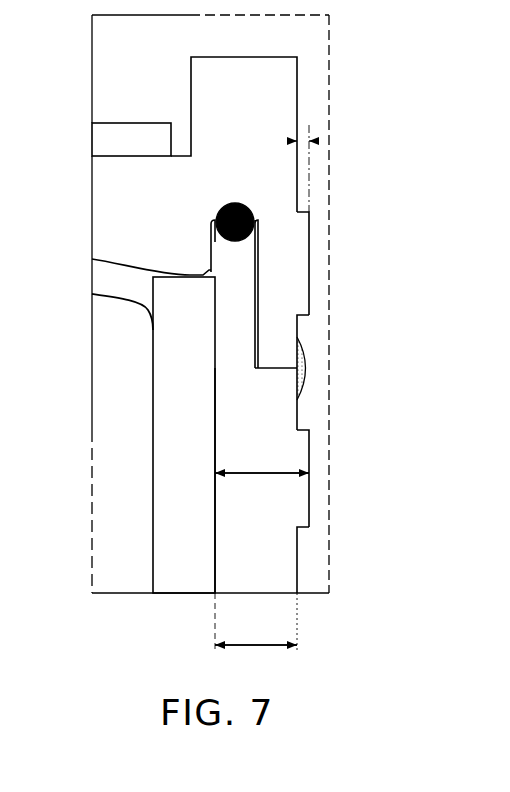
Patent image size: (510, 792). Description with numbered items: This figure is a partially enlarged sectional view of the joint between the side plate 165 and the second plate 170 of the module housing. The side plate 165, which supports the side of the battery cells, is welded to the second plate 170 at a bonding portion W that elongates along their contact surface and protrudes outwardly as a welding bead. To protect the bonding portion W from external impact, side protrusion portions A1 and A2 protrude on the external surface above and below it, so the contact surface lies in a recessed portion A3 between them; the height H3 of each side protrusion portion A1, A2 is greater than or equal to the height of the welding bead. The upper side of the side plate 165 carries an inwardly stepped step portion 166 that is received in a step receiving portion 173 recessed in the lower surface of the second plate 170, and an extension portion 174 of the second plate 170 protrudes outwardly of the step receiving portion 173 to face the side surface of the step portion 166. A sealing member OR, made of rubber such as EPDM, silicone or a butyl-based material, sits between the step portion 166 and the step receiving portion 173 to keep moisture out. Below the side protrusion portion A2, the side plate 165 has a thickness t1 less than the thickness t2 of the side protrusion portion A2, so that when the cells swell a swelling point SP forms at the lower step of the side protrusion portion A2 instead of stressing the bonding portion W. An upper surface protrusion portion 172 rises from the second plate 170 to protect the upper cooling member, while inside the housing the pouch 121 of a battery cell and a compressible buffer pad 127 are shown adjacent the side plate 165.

The upper surface protrusion portion 172 is at (282, 84).
The height of side protrusion portion H3 is at (302, 140).
The sealing member OR is at (254, 214).
The step receiving portion 173 is at (250, 258).
The side protrusion portion A1 is at (318, 272).
The extension portion 174 is at (286, 293).
The recessed portion A3 is at (300, 332).
The bonding portion W is at (306, 370).
The side protrusion portion A2 is at (300, 431).
The thickness of side protrusion portion t2 is at (250, 473).
The side plate 165 is at (264, 494).
The swelling point SP is at (298, 528).
The second plate 170 is at (110, 203).
The step portion 166 is at (230, 330).
The pouch 121 is at (108, 405).
The buffer pad 127 is at (165, 531).
The thickness of side plate t1 is at (256, 621).